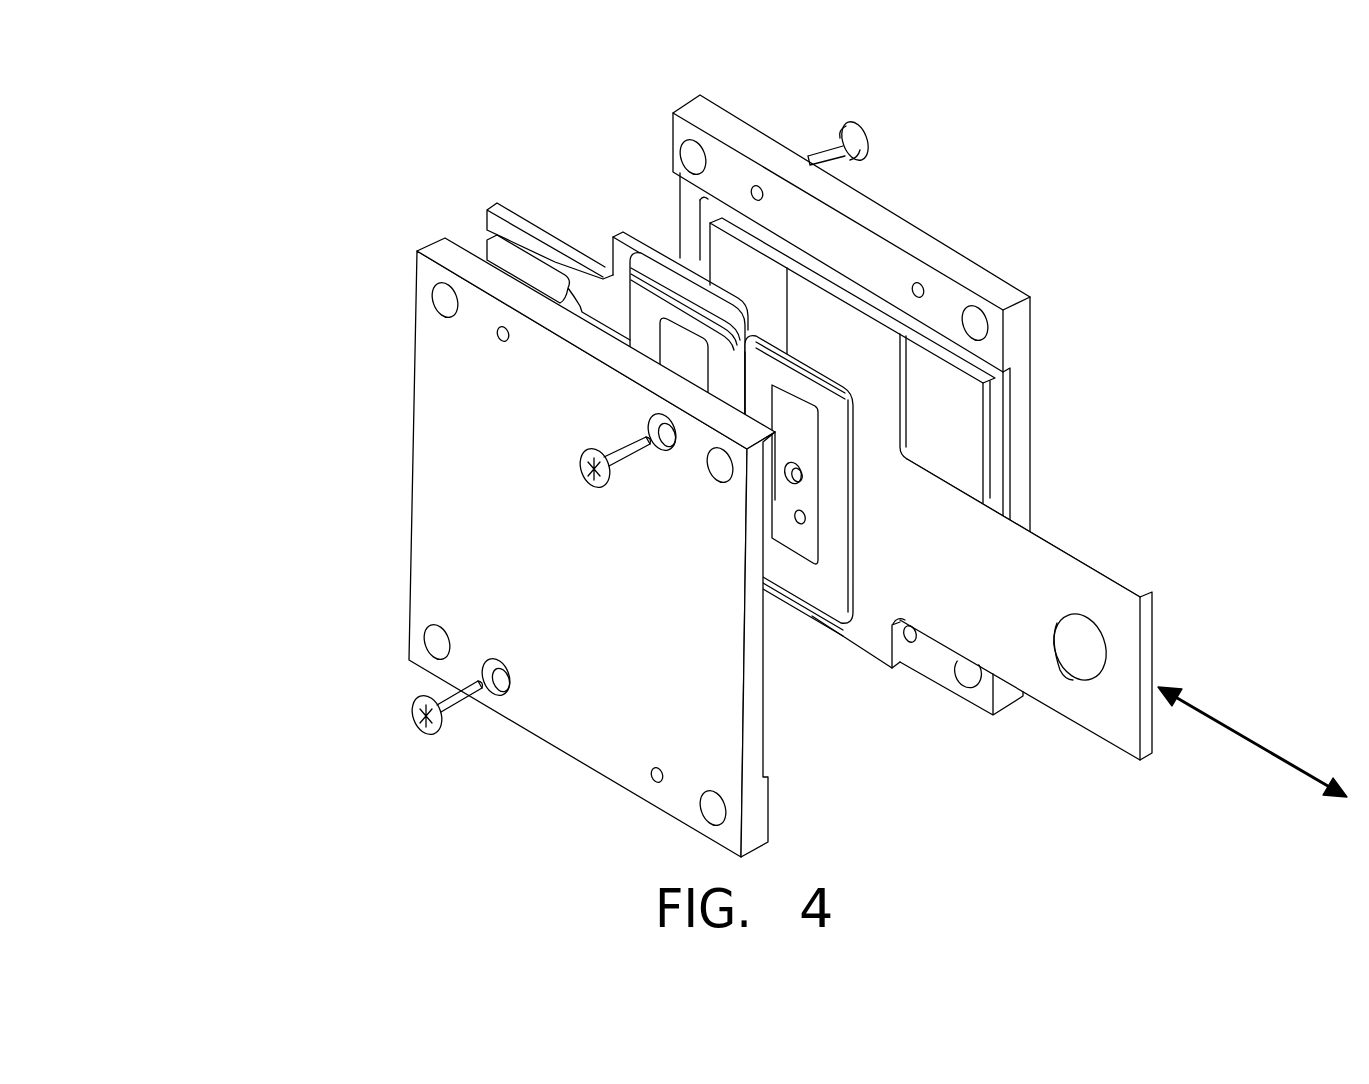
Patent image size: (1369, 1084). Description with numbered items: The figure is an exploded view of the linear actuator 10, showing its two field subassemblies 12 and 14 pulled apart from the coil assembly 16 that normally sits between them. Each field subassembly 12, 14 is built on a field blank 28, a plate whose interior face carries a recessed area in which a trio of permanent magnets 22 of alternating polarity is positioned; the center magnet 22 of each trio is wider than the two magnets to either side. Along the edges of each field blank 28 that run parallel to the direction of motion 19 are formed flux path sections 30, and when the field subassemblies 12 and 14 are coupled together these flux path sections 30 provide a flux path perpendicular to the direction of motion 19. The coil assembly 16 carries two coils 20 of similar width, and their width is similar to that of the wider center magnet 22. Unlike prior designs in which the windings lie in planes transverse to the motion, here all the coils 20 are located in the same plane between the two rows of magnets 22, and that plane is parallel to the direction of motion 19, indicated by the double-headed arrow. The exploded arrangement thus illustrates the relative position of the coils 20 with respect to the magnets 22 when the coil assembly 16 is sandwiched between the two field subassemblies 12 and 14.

The linear actuator 10 is at (583, 100).
The field subassembly 12 is at (406, 428).
The field subassembly 14 is at (920, 212).
The coil assembly 16 is at (1088, 550).
The direction of motion 19 is at (1212, 724).
The coil 20 is at (667, 309).
The permanent magnet 22 is at (751, 289).
The field blank 28 is at (1017, 473).
The flux path section 30 is at (1012, 335).